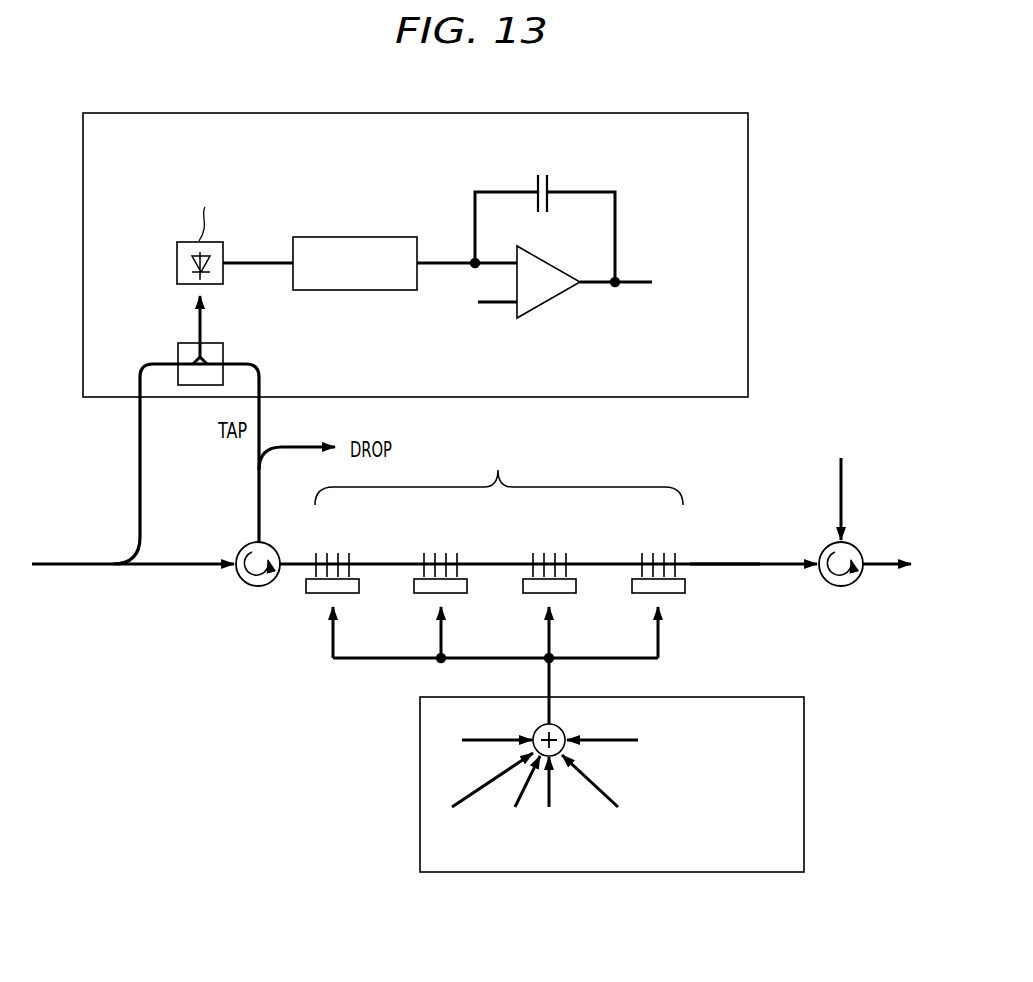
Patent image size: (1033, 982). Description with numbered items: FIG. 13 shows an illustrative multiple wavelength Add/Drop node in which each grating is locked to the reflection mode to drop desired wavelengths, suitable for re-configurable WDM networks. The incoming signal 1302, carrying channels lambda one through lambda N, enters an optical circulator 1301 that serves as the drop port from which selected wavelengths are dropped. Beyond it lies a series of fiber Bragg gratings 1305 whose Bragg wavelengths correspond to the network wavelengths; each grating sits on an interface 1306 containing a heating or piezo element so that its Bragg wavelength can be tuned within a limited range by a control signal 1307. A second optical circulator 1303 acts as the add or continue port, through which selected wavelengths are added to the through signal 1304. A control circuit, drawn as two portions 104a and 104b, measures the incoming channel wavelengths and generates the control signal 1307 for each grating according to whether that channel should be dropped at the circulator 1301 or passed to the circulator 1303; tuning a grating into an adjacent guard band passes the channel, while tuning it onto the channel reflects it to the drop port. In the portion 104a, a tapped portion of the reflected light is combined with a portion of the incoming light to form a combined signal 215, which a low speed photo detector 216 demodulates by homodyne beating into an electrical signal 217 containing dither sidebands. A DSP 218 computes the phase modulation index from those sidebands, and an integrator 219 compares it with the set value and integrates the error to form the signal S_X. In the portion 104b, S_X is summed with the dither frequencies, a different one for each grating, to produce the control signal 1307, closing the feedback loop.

The control circuit 104a is at (748, 244).
The control circuit 104b is at (804, 784).
The combined signal 215 is at (200, 316).
The photo detector 216 is at (177, 263).
The electrical signal 217 is at (256, 265).
The DSP 218 is at (350, 236).
The integrator 219 is at (552, 300).
The optical circulator 1301 is at (242, 552).
The incoming signal 1302 is at (48, 562).
The optical circulator 1303 is at (855, 545).
The through signal 1304 is at (738, 562).
The fiber Bragg gratings 1305 is at (499, 517).
The interface 1306 is at (307, 591).
The control signal 1307 is at (362, 660).